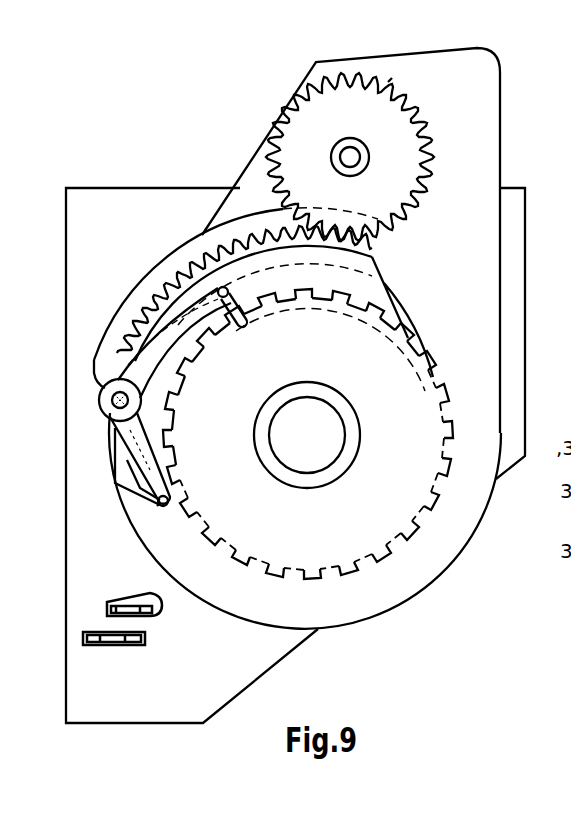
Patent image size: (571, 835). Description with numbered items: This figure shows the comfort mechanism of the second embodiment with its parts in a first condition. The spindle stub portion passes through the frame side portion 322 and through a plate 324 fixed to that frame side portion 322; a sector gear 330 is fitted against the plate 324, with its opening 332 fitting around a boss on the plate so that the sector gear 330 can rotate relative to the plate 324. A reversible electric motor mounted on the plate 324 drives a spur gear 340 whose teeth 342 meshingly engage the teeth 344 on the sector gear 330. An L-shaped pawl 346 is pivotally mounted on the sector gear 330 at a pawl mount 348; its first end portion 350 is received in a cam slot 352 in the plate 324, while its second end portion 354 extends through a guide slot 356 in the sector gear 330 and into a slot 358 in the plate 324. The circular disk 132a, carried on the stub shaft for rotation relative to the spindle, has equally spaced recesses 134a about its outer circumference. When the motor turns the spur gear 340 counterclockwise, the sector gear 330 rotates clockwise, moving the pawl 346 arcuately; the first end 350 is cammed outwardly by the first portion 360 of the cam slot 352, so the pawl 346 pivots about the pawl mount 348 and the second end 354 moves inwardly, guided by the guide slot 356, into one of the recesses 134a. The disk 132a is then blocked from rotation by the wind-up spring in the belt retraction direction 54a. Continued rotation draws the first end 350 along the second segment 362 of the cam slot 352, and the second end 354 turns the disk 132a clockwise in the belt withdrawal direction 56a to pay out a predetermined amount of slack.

The frame side portion 322 is at (115, 217).
The plate 324 is at (402, 577).
The sector gear 330 is at (380, 262).
The opening 332 is at (281, 384).
The spur gear 340 is at (350, 103).
The teeth 342 is at (392, 87).
The teeth 344 is at (125, 312).
The L-shaped pawl 346 is at (96, 388).
The pawl mount 348 is at (101, 408).
The first end portion 350 is at (162, 506).
The cam slot 352 is at (118, 480).
The second end portion 354 is at (226, 291).
The guide slot 356 is at (242, 318).
The slot 358 is at (413, 313).
The first portion 360 is at (148, 500).
The second segment 362 is at (113, 458).
The circular disk 132a is at (328, 577).
The recesses 134a is at (430, 507).
The belt retraction direction 54a is at (210, 446).
The belt withdrawal direction 56a is at (400, 446).